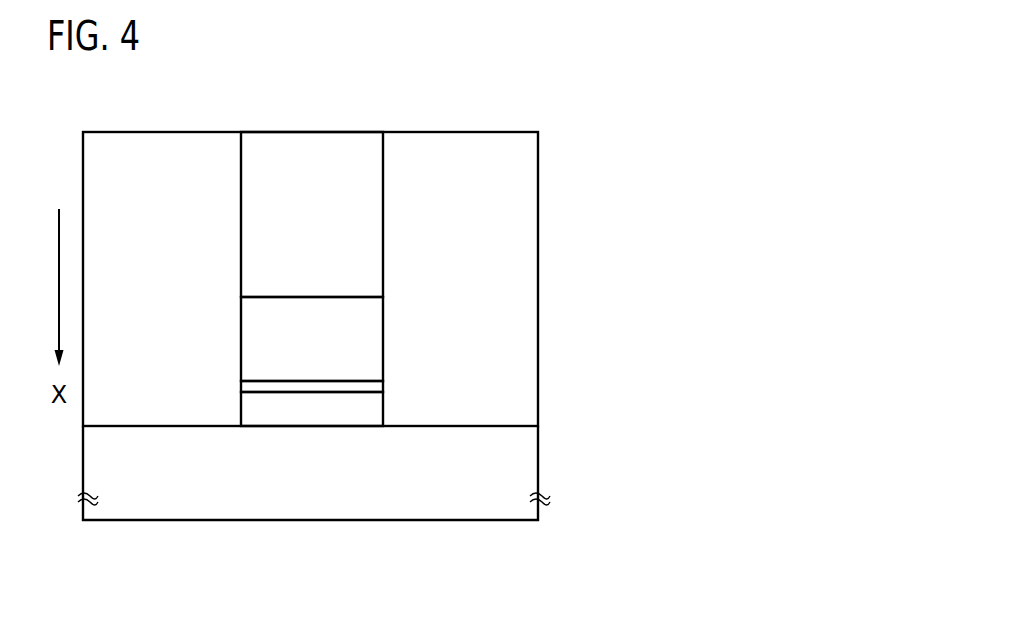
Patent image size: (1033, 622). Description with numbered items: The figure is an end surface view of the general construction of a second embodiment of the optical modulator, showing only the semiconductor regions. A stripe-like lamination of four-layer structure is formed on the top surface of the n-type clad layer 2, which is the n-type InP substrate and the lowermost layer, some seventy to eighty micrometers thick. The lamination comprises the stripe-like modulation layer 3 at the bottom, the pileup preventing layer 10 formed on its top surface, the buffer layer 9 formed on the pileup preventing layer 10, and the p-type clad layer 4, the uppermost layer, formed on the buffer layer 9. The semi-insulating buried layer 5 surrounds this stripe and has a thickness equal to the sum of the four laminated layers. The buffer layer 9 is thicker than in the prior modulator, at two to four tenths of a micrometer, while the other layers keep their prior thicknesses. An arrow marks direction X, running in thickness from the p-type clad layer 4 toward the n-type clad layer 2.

The n-type clad layer 2 is at (512, 477).
The modulation layer 3 is at (373, 412).
The p-type clad layer 4 is at (375, 187).
The semi-insulating buried layer 5 is at (197, 142).
The buffer layer 9 is at (370, 323).
The pileup preventing layer 10 is at (377, 385).